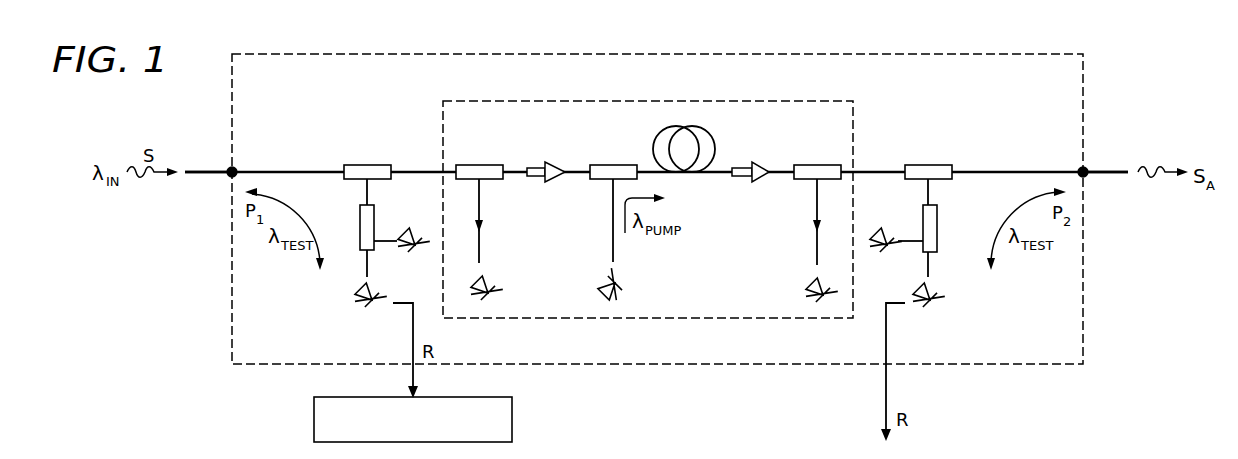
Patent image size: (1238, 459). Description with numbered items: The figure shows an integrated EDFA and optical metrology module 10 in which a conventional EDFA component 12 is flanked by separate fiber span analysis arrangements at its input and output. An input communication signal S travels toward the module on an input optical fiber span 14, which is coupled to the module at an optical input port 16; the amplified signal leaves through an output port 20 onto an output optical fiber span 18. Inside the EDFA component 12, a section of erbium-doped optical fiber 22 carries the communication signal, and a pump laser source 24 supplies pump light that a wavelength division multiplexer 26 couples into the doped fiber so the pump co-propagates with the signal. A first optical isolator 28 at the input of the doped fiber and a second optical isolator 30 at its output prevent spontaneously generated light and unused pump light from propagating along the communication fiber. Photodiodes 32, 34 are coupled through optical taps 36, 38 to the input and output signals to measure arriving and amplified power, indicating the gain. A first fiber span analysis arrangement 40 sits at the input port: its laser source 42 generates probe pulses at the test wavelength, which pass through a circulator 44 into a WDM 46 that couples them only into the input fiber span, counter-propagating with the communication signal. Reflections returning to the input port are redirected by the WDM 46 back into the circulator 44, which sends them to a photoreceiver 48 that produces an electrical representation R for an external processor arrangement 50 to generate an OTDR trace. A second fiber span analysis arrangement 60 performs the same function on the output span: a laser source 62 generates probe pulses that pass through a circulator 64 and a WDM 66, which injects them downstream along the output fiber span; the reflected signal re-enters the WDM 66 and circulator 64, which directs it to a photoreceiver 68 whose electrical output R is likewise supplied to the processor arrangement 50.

The integrated EDFA and optical metrology module 10 is at (1135, 265).
The EDFA component 12 is at (598, 101).
The input optical fiber span 14 is at (214, 170).
The optical input port 16 is at (232, 174).
The output optical fiber span 18 is at (1108, 168).
The output port 20 is at (1088, 176).
The erbium-doped optical fiber 22 is at (714, 142).
The pump laser source 24 is at (600, 283).
The wavelength division multiplexer 26 is at (612, 165).
The first optical isolator 28 is at (540, 182).
The second optical isolator 30 is at (744, 182).
The photodiode 32 is at (491, 283).
The photodiode 34 is at (801, 287).
The optical tap 36 is at (478, 165).
The optical tap 38 is at (815, 165).
The first fiber span analysis arrangement 40 is at (298, 151).
The laser source 42 is at (380, 290).
The circulator 44 is at (360, 211).
The WDM 46 is at (366, 165).
The photoreceiver 48 is at (410, 228).
The external processor arrangement 50 is at (514, 420).
The second fiber span analysis arrangement 60 is at (1011, 150).
The laser source 62 is at (918, 290).
The circulator 64 is at (937, 220).
The WDM 66 is at (925, 165).
The photoreceiver 68 is at (886, 228).